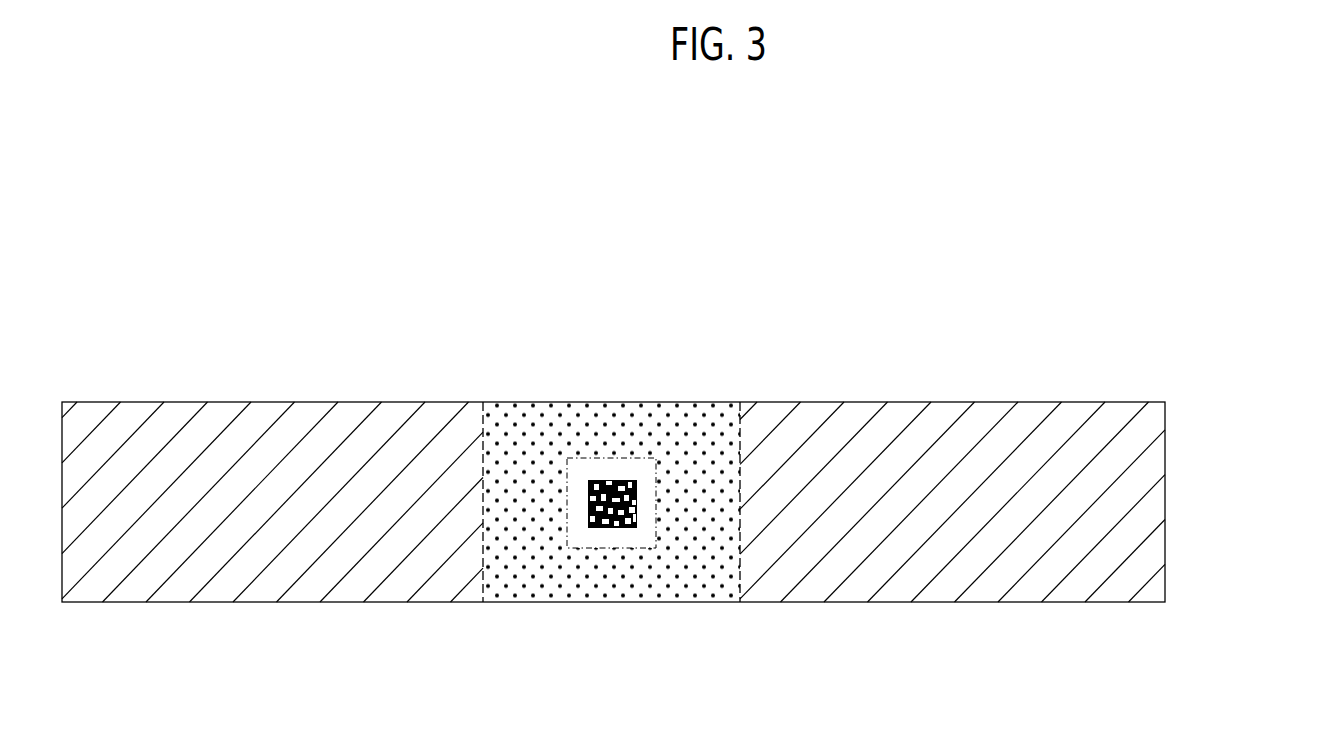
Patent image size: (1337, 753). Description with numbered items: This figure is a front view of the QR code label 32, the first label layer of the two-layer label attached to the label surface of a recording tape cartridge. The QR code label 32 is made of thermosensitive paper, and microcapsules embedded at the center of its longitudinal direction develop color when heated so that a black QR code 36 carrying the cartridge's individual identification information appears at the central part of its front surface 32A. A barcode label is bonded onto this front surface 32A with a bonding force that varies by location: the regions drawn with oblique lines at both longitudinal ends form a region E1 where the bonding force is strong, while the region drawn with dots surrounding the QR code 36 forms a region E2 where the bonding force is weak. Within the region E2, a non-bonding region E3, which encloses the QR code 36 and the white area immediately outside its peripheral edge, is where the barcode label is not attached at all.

The QR code label 32 is at (1178, 507).
The front surface 32A is at (555, 455).
The QR code 36 is at (620, 478).
The region exerted a strong bonding force E1 is at (234, 588).
The region exerted a weak bonding force E2 is at (687, 588).
The non-bonding region E3 is at (576, 531).